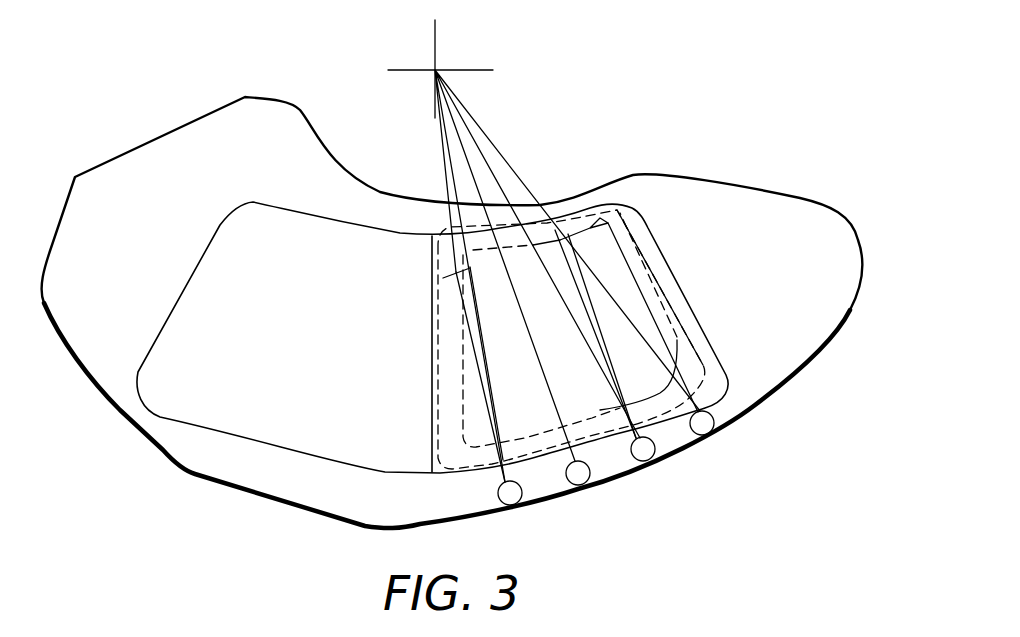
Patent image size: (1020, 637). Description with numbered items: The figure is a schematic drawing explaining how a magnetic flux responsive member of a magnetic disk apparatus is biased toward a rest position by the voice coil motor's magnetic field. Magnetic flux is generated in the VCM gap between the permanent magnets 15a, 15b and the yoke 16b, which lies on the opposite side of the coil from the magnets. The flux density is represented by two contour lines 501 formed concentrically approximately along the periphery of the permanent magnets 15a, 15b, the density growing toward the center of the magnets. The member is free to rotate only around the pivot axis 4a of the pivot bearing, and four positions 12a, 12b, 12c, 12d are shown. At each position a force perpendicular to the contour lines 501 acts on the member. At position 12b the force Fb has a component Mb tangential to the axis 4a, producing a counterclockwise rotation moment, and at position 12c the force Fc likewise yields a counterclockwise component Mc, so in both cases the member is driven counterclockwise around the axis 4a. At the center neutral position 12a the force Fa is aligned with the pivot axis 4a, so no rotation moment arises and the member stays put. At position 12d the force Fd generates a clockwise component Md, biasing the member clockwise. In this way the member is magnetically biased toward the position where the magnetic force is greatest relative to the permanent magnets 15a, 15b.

The pivot axis 4a is at (437, 68).
The force component Md is at (443, 207).
The force component Mb is at (547, 210).
The force component Mc is at (597, 200).
The force Fa is at (540, 375).
The force Fb is at (598, 364).
The force Fc is at (625, 262).
The force Fd is at (466, 372).
The contour lines 501 is at (663, 318).
The position of magnetic flux responsive member 12a is at (586, 485).
The position of magnetic flux responsive member 12b is at (657, 458).
The position of magnetic flux responsive member 12c is at (711, 432).
The position of magnetic flux responsive member 12d is at (517, 507).
The permanent magnet 15a is at (242, 405).
The permanent magnet 15b is at (437, 473).
The yoke 16b is at (130, 362).